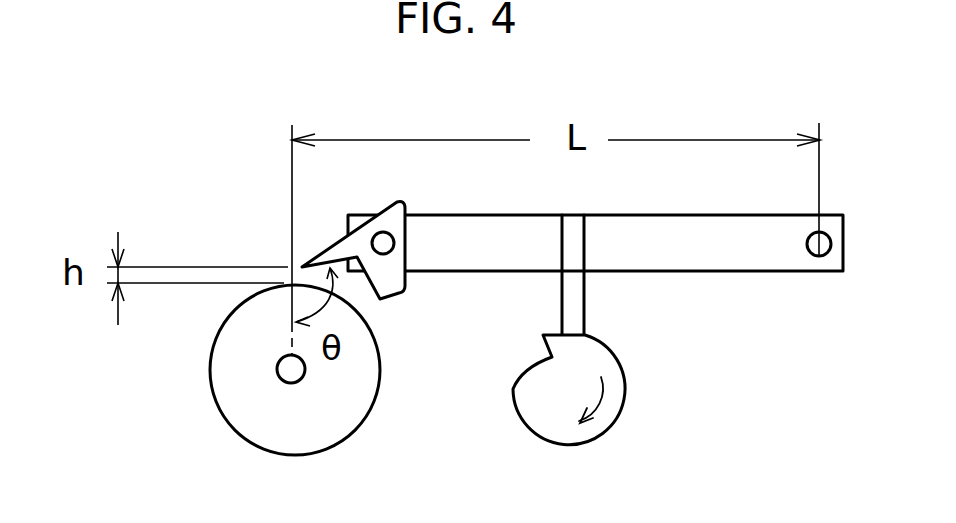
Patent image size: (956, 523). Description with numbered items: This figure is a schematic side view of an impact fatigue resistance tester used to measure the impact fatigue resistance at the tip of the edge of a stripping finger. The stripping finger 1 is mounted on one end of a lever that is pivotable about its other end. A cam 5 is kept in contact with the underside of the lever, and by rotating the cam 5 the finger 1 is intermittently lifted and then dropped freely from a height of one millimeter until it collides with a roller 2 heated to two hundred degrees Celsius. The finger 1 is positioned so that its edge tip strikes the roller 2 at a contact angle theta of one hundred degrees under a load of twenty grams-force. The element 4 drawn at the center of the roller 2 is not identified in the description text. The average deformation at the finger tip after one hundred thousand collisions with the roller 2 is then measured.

The stripping finger 1 is at (330, 243).
The roller 2 is at (242, 407).
The roller shaft 4 is at (302, 374).
The cam 5 is at (615, 385).